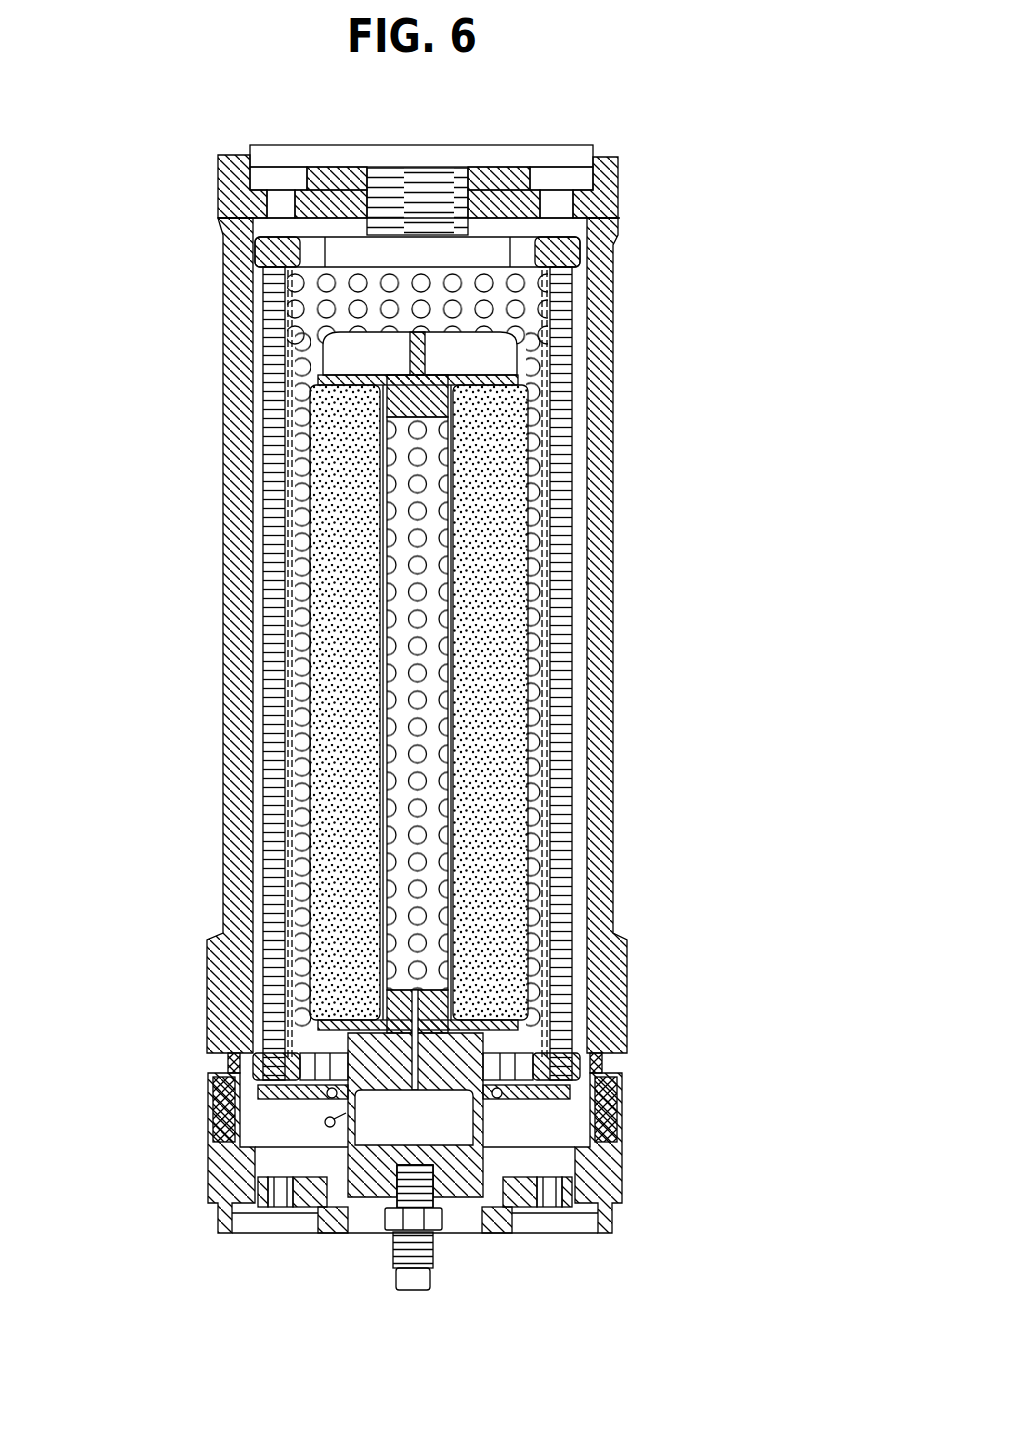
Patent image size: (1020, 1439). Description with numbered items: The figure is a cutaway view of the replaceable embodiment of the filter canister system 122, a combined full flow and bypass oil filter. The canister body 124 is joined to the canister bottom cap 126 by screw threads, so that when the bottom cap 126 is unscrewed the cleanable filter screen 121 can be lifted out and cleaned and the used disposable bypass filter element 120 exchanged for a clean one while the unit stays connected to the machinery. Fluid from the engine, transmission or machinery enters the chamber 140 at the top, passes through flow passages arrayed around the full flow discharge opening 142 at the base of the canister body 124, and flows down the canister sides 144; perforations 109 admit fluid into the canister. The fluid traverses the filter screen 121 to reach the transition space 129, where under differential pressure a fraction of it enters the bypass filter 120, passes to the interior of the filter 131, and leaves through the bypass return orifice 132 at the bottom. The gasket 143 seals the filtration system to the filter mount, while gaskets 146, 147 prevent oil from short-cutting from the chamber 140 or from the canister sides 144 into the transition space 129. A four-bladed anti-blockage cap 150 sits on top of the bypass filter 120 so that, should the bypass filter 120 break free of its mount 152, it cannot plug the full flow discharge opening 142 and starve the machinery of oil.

The perforations 109 is at (567, 563).
The disposable bypass filter element 120 is at (505, 683).
The cleanable filter screen 121 is at (557, 633).
The filter canister system 122 is at (200, 549).
The canister body 124 is at (610, 420).
The canister bottom cap 126 is at (622, 1160).
The transition space 129 is at (515, 845).
The interior of the filter 131 is at (425, 777).
The bypass return orifice 132 is at (413, 1090).
The chamber 140 is at (610, 218).
The full flow discharge opening 142 is at (422, 187).
The gasket 143 is at (598, 150).
The canister sides 144 is at (578, 477).
The gasket 146 is at (578, 283).
The gasket 147 is at (593, 1067).
The four-bladed anti-blockage cap 150 is at (520, 380).
The mount 152 is at (520, 1025).